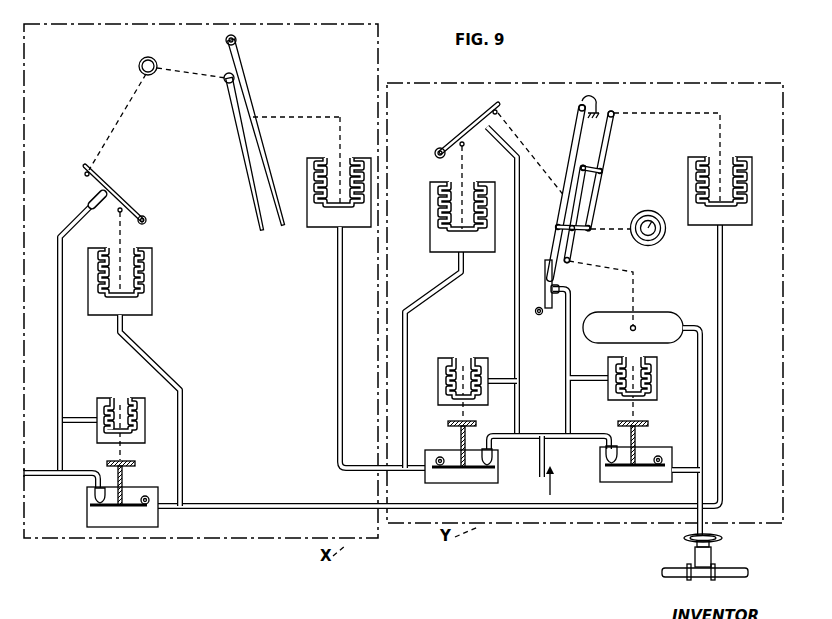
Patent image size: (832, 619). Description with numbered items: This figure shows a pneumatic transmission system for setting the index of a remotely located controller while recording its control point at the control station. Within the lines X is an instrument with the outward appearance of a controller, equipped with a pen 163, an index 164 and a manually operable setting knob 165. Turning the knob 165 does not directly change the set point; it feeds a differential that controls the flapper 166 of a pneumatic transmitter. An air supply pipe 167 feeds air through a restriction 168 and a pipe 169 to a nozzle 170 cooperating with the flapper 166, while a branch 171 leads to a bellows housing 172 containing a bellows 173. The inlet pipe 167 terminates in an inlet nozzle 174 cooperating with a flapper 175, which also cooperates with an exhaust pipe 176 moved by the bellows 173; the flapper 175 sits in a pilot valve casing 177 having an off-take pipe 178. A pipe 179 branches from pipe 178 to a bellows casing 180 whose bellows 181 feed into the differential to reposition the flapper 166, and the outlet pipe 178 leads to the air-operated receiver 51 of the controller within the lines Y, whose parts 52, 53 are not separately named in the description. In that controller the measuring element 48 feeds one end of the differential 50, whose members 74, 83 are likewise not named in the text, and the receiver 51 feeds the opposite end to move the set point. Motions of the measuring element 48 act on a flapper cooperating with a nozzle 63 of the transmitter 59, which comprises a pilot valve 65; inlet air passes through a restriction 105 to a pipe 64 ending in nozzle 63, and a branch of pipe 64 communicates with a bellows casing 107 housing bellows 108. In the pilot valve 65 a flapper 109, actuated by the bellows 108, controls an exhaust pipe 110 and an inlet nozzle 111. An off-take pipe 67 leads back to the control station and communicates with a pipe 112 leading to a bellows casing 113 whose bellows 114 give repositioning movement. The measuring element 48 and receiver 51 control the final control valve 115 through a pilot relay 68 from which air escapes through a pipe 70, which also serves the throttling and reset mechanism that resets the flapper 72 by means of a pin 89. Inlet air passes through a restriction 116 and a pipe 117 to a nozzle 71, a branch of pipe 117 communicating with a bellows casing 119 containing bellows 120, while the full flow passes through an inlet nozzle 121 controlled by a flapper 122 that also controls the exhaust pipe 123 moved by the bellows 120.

The measuring element 48 is at (658, 238).
The differential 50 is at (578, 180).
The receiver 51 is at (691, 158).
The bellows housing 52 is at (689, 189).
The bellows 53 is at (697, 167).
The transmitter 59 is at (444, 187).
The nozzle 63 is at (485, 132).
The pipe 64 is at (519, 215).
The pilot valve 65 is at (499, 478).
The off-take pipe 67 is at (336, 384).
The pilot relay 68 is at (601, 478).
The pipe 70 is at (699, 406).
The nozzle 71 is at (556, 294).
The flapper 72 is at (546, 278).
The lever 74 is at (577, 137).
The link 83 is at (597, 187).
The pin 89 is at (635, 324).
The restriction 105 is at (515, 402).
The bellows casing 107 is at (462, 357).
The bellows 108 is at (447, 380).
The flapper 109 is at (455, 484).
The exhaust pipe 110 is at (460, 431).
The inlet nozzle 111 is at (494, 455).
The pipe 112 is at (427, 295).
The bellows casing 113 is at (431, 212).
The bellows 114 is at (439, 194).
The valve 115 is at (690, 552).
The restriction 116 is at (318, 230).
The pipe 117 is at (315, 175).
The bellows casing 119 is at (658, 360).
The bellows 120 is at (652, 378).
The inlet nozzle 121 is at (606, 455).
The flapper 122 is at (630, 483).
The exhaust pipe 123 is at (640, 433).
The pen 163 is at (249, 102).
The index 164 is at (244, 150).
The setting knob 165 is at (156, 59).
The flapper 166 is at (99, 181).
The air supply pipe 167 is at (39, 479).
The restriction 168 is at (60, 452).
The pipe 169 is at (62, 330).
The nozzle 170 is at (95, 195).
The branch 171 is at (80, 416).
The bellows housing 172 is at (114, 398).
The bellows 173 is at (140, 416).
The inlet nozzle 174 is at (95, 498).
The flapper 175 is at (110, 526).
The exhaust pipe 176 is at (127, 470).
The pilot valve casing 177 is at (159, 516).
The off-take pipe 178 is at (224, 506).
The pipe 179 is at (157, 365).
The bellows casing 180 is at (153, 288).
The bellows 181 is at (145, 260).